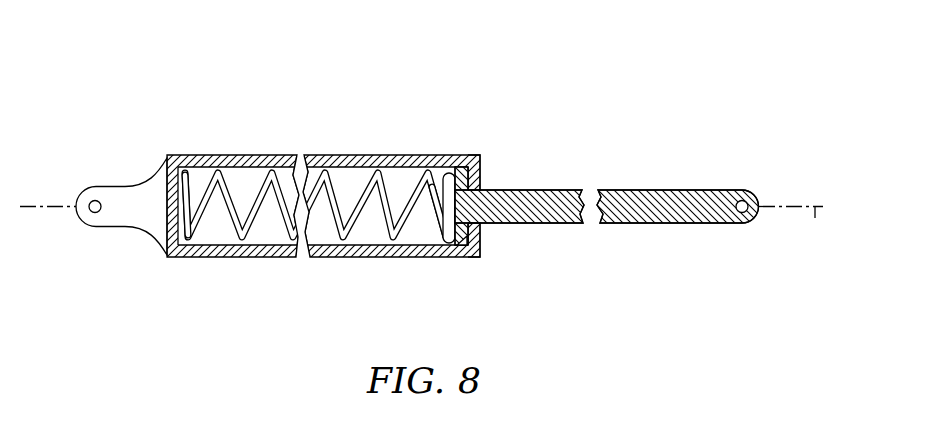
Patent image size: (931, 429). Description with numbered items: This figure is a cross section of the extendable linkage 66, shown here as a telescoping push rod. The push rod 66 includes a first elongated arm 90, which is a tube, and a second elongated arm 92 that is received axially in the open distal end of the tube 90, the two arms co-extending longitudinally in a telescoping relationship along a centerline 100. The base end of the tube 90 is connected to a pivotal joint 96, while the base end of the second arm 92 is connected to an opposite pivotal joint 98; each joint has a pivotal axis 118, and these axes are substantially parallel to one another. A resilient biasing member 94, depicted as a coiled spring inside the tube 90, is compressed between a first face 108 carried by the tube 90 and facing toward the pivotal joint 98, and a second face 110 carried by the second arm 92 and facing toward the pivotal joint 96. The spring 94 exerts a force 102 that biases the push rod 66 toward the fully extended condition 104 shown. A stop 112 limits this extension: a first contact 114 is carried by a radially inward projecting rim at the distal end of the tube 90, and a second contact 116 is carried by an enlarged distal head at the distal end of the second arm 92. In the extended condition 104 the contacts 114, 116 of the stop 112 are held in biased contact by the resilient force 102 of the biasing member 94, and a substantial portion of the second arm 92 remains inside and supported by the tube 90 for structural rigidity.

The extendable linkage 66 is at (540, 73).
The first elongated arm 90 is at (327, 150).
The second elongated arm 92 is at (642, 185).
The resilient biasing member 94 is at (360, 177).
The pivotal joint 96 is at (95, 192).
The pivotal joint 98 is at (745, 188).
The centerline 100 is at (808, 228).
The force 102 is at (450, 207).
The fully extended condition 104 is at (527, 130).
The first face 108 is at (193, 200).
The second face 110 is at (440, 222).
The stop 112 is at (468, 150).
The first contact 114 is at (457, 243).
The second contact 116 is at (480, 234).
The pivotal axis 118 is at (100, 215).